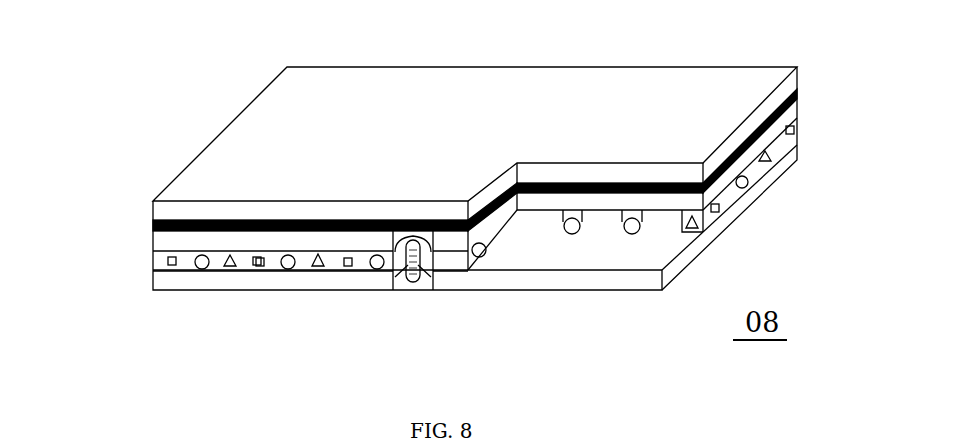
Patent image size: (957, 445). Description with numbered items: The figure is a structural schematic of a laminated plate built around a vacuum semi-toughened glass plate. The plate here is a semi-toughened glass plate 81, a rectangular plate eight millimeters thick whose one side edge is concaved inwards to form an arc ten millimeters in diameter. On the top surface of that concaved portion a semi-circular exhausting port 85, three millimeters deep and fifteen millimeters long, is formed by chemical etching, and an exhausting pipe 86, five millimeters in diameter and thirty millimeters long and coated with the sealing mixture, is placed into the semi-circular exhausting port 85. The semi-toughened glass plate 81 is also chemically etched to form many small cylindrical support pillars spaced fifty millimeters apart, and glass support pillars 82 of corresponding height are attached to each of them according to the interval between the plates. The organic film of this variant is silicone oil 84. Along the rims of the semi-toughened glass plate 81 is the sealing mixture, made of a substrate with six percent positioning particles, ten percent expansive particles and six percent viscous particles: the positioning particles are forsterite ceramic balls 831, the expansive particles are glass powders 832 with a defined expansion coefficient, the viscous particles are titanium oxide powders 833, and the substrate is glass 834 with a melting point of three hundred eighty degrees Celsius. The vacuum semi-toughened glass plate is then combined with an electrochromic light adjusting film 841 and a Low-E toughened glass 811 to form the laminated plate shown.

The semi-toughened glass plate 81 is at (160, 287).
The Low-E toughened glass 811 is at (153, 203).
The electrochromic light adjusting film 841 is at (153, 225).
The glass support pillars 82 is at (622, 218).
The forsterite ceramic balls 831 is at (202, 269).
The glass powders 832 is at (232, 267).
The titanium oxide powders 833 is at (262, 267).
The glass 834 is at (303, 264).
The silicone oil 84 is at (703, 225).
The semi-circular exhausting port 85 is at (420, 283).
The exhausting pipe 86 is at (408, 270).